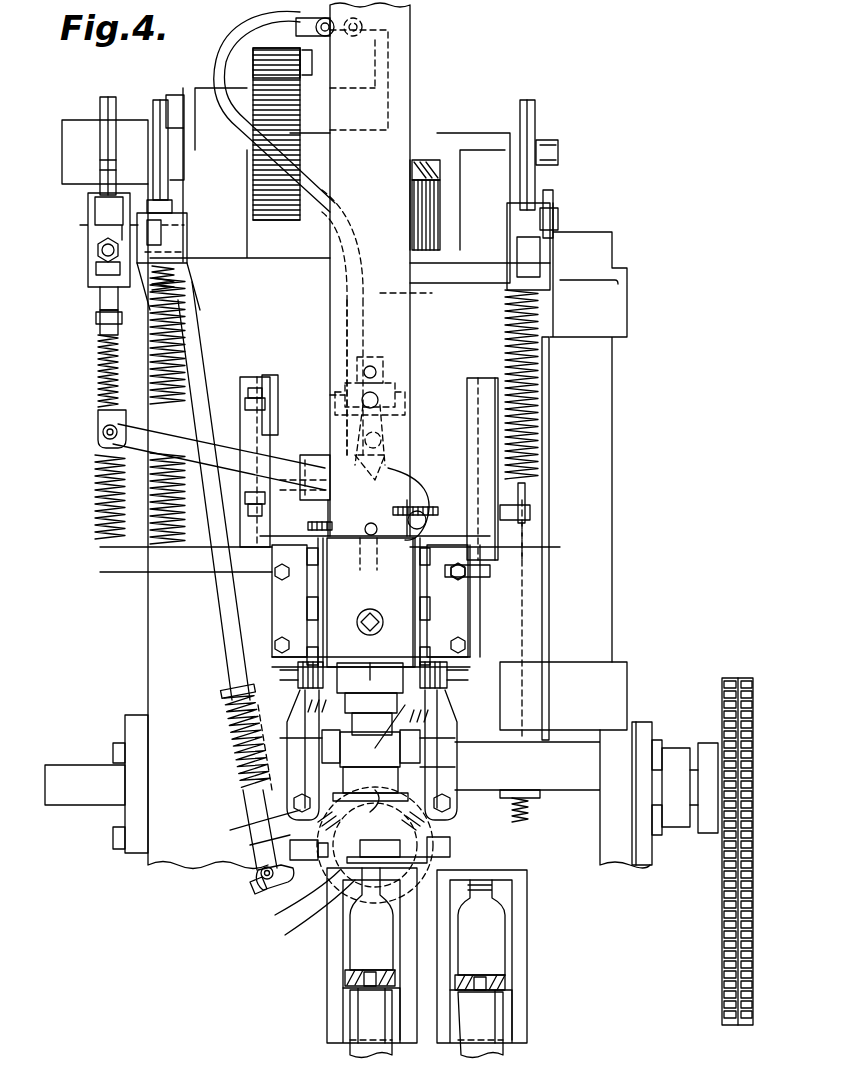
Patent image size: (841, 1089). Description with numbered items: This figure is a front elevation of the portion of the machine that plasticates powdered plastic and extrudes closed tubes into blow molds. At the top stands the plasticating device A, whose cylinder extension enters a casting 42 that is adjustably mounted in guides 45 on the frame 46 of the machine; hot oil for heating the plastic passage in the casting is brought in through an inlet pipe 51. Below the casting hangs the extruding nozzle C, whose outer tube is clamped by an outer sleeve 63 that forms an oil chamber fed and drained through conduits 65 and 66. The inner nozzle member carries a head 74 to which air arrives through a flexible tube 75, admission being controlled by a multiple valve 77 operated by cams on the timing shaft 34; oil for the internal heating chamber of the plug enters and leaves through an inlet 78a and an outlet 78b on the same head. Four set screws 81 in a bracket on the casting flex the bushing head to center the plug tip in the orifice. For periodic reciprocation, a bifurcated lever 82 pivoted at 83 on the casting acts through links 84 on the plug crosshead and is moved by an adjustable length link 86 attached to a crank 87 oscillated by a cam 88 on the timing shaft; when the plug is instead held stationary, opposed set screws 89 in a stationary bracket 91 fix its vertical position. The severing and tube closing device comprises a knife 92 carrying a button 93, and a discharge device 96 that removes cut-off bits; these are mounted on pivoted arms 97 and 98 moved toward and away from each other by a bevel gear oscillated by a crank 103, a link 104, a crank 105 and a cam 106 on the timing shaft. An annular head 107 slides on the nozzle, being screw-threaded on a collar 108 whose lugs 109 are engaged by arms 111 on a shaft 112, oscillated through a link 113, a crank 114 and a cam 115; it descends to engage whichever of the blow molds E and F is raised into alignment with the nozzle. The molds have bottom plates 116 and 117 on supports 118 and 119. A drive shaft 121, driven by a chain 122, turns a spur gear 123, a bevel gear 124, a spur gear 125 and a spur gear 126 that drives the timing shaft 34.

The plasticating device A is at (375, 35).
The extruding nozzle C is at (395, 829).
The blow mold E is at (319, 966).
The blow mold F is at (536, 921).
The timing shaft 34 is at (174, 96).
The casting 42 is at (455, 595).
The guides 45 is at (272, 380).
The frame 46 is at (326, 310).
The inlet pipe 51 is at (478, 555).
The outer sleeve 63 is at (370, 699).
The conduit 65 is at (298, 676).
The conduit 66 is at (447, 676).
The head 74 is at (378, 375).
The flexible tube 75 is at (258, 45).
The multiple valve 77 is at (370, 15).
The inlet 78a is at (340, 395).
The outlet 78b is at (400, 385).
The set screws 81 is at (420, 495).
The bifurcated lever 82 is at (292, 445).
The pivot 83 is at (427, 520).
The links 84 is at (382, 435).
The adjustable length link 86 is at (102, 330).
The crank 87 is at (95, 268).
The cam 88 is at (104, 100).
The set screws 89 is at (256, 390).
The stationary bracket 91 is at (248, 420).
The knife 92 is at (286, 898).
The button 93 is at (306, 914).
The discharge device 96 is at (430, 865).
The pivoted arm 97 is at (250, 842).
The pivoted arm 98 is at (452, 848).
The crank 103 is at (255, 900).
The link 104 is at (216, 585).
The crank 105 is at (178, 222).
The cam 106 is at (158, 110).
The annular head 107 is at (369, 789).
The collar 108 is at (405, 716).
The lugs 109 is at (330, 748).
The arms 111 is at (364, 702).
The shaft 112 is at (566, 760).
The link 113 is at (549, 590).
The crank 114 is at (548, 215).
The cam 115 is at (540, 118).
The bottom plate 116 is at (350, 980).
The bottom plate 117 is at (505, 982).
The support 118 is at (360, 1018).
The support 119 is at (495, 1018).
The drive shaft 121 is at (695, 748).
The chain 122 is at (732, 678).
The spur gear 123 is at (412, 210).
The bevel gear 124 is at (428, 195).
The spur gear 125 is at (260, 50).
The spur gear 126 is at (276, 225).